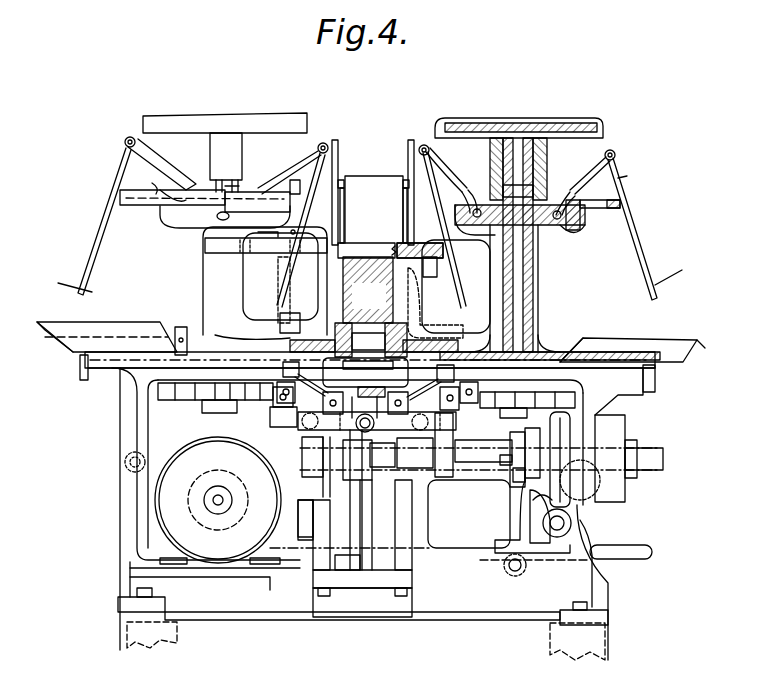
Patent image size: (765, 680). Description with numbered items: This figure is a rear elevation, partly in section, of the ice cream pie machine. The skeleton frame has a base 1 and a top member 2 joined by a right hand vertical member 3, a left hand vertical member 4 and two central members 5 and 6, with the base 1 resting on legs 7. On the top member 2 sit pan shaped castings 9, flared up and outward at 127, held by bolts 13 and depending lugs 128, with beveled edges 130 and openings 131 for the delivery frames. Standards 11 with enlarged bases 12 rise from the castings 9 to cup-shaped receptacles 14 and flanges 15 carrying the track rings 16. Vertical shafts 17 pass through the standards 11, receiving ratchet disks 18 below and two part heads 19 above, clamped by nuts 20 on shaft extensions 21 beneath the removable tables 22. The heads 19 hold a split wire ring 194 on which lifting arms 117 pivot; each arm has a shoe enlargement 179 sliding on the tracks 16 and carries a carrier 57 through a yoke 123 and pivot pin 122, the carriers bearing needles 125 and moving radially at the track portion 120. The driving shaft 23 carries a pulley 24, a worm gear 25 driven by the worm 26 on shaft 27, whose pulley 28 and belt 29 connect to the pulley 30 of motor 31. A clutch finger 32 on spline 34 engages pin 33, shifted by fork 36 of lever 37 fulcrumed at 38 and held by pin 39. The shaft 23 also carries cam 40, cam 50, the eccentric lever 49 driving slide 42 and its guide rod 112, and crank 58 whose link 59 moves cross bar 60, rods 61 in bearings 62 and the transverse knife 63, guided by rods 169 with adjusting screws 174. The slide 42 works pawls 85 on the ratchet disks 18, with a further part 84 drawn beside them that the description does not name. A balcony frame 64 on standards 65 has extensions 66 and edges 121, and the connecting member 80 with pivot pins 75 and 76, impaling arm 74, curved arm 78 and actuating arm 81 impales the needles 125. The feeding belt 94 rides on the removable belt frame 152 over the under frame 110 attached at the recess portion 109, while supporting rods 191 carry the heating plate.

The base 1 is at (212, 612).
The top member 2 is at (620, 332).
The right hand vertical member 3 is at (120, 496).
The left hand vertical member 4 is at (585, 418).
The vertical member 5 is at (300, 507).
The vertical member 6 is at (428, 490).
The legs 7 is at (148, 648).
The pan shaped castings 9 is at (110, 332).
The standards 11 is at (212, 290).
The enlarged base 12 is at (560, 348).
The bolts 13 is at (545, 372).
The cup-shaped receptacles 14 is at (574, 235).
The flanges 15 is at (162, 218).
The track rings 16 is at (128, 198).
The vertical shafts 17 is at (514, 268).
The ratchet disks 18 is at (190, 394).
The two part heads 19 is at (548, 230).
The nuts 20 is at (240, 186).
The shaft extensions 21 is at (520, 160).
The removable tables 22 is at (218, 118).
The driving shaft 23 is at (484, 458).
The pulley 24 is at (626, 432).
The worm gear 25 is at (560, 458).
The worm 26 is at (530, 525).
The right angled shaft 27 is at (572, 520).
The pulley 28 is at (542, 503).
The belt 29 is at (350, 552).
The motor pulley 30 is at (196, 486).
The motor 31 is at (186, 448).
The clutch finger 32 is at (536, 445).
The pin 33 is at (511, 457).
The spline 34 is at (505, 462).
The fork 36 is at (512, 478).
The shift lever 37 is at (520, 510).
The fulcrum 38 is at (515, 572).
The pin 39 is at (600, 550).
The cam 40 is at (448, 451).
The slide 42 is at (300, 430).
The eccentric lever 49 is at (380, 460).
The cam 50 is at (361, 505).
The carriers 57 is at (104, 222).
The crank 58 is at (340, 452).
The link 59 is at (360, 500).
The cross bar 60 is at (365, 586).
The vertical rods 61 is at (336, 210).
The bearings 62 is at (285, 315).
The transverse cutting knife 63 is at (368, 190).
The balcony frame 64 is at (360, 246).
The standards 65 is at (435, 267).
The side wise extensions 66 is at (206, 246).
The impaling arm 74 is at (245, 298).
The pivot pin 75 is at (250, 330).
The pivot pin 76 is at (301, 186).
The curved arm 78 is at (276, 241).
The vertical connecting member 80 is at (290, 268).
The actuating arm 81 is at (368, 381).
The block 84 is at (366, 401).
The spring pressed pawls 85 is at (276, 401).
The feeding belt 94 is at (360, 372).
The recess portion 109 is at (351, 394).
The under frame 110 is at (375, 384).
The guide rod 112 is at (365, 416).
The lifting arms 117 is at (176, 170).
The radial portion of track 120 is at (216, 217).
The edges 121 is at (445, 252).
The pivot pin 122 is at (125, 142).
The yoke 123 is at (633, 173).
The needles 125 is at (370, 279).
The flared portion 127 is at (52, 340).
The depending lugs 128 is at (80, 371).
The beveled edges 130 is at (206, 353).
The openings 131 is at (180, 330).
The removable belt frame 152 is at (374, 307).
The guide rods 169 is at (336, 143).
The adjusting screws 174 is at (341, 181).
The enlargement 179 is at (156, 186).
The supporting rods 191 is at (125, 463).
The split wire ring 194 is at (178, 228).